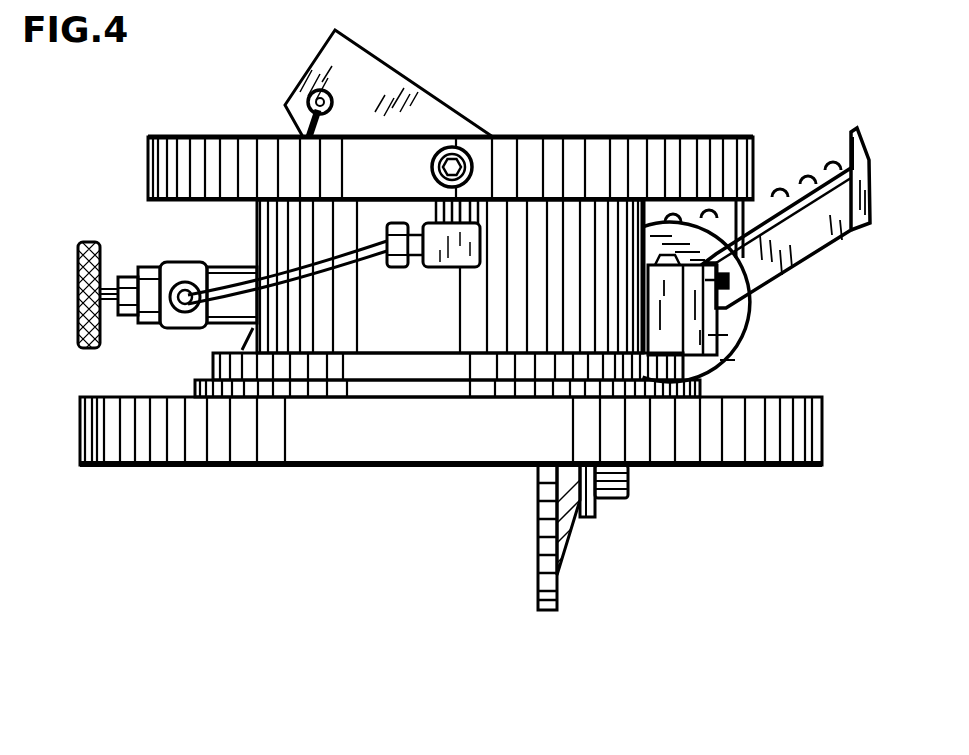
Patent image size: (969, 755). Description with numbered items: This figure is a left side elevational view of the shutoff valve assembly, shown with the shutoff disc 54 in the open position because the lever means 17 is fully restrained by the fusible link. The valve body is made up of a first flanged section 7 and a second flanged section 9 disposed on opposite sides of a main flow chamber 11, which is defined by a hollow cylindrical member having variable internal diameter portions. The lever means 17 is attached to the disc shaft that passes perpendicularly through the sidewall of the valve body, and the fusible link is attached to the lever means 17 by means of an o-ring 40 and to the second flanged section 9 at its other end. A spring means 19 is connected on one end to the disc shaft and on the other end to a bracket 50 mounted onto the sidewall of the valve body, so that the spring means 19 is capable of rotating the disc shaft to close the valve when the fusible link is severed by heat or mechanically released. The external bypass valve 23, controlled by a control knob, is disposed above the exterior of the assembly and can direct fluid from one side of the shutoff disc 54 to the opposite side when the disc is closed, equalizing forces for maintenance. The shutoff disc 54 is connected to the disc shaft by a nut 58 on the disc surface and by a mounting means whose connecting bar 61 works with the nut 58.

The first flanged section 7 is at (577, 138).
The second flanged section 9 is at (795, 397).
The main flow chamber 11 is at (256, 238).
The lever means 17 is at (391, 66).
The spring means 19 is at (790, 163).
The external bypass valve 23 is at (192, 262).
The o-ring 40 is at (311, 135).
The bracket 50 is at (792, 268).
The shutoff disc 54 is at (538, 565).
The nut 58 is at (630, 487).
The connecting bar 61 is at (595, 512).